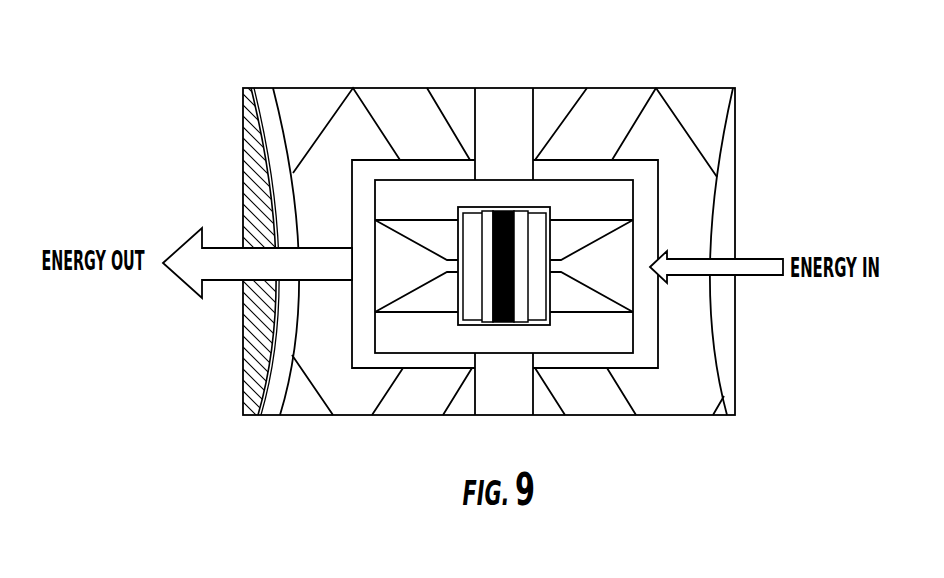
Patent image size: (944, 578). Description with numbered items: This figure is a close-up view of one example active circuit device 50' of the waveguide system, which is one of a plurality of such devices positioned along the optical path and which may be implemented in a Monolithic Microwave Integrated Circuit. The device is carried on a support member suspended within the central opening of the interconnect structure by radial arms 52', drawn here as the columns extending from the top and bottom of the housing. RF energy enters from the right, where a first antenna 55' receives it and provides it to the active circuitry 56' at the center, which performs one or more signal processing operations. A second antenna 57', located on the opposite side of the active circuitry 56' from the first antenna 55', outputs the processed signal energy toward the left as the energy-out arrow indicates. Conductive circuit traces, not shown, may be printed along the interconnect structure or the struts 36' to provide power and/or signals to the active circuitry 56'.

The strut 36' is at (489, 235).
The active circuit device 50' is at (486, 235).
The radial arm 52' is at (500, 213).
The first antenna 55' is at (684, 233).
The active circuitry 56' is at (519, 168).
The second antenna 57' is at (306, 229).